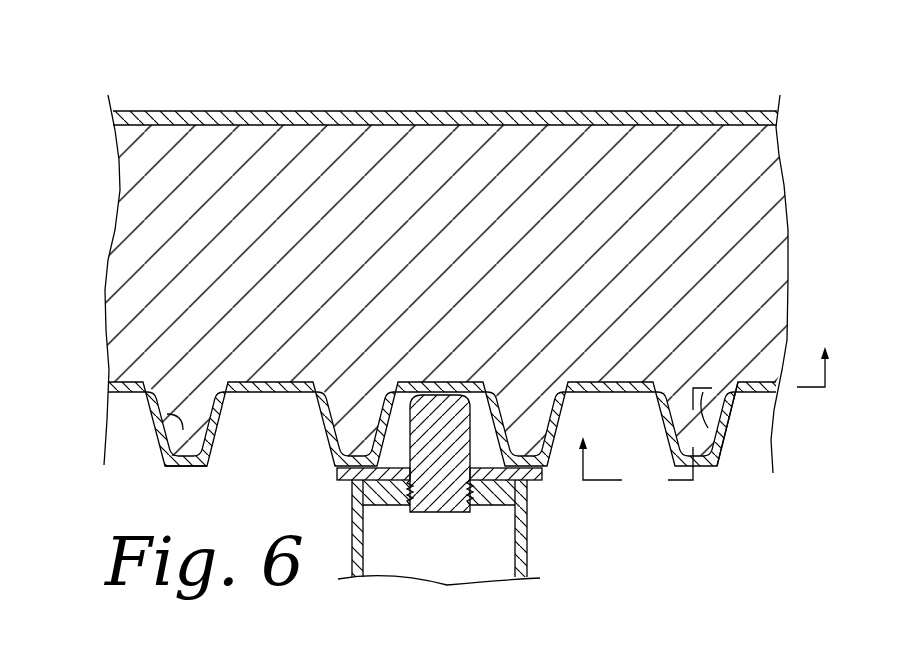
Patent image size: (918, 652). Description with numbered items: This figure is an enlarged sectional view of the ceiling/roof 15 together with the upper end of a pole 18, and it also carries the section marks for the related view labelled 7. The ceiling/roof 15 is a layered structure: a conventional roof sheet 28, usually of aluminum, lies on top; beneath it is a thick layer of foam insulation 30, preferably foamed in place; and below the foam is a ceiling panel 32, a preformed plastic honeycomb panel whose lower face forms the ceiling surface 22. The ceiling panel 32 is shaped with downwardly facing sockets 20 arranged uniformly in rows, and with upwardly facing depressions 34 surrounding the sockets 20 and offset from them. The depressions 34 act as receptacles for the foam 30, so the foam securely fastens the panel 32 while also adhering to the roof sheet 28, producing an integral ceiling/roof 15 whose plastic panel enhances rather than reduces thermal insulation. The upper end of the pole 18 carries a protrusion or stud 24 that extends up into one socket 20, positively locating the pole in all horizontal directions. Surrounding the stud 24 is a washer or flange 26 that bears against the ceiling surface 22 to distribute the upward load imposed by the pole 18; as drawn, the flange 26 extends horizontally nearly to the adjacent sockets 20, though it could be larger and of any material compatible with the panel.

The ceiling/roof 15 is at (491, 241).
The pole 18 is at (352, 551).
The socket 20 is at (216, 437).
The ceiling surface 22 is at (157, 491).
The stud 24 is at (507, 489).
The flange 26 is at (340, 481).
The roof sheet 28 is at (290, 111).
The foam insulation 30 is at (737, 228).
The ceiling panel 32 is at (729, 449).
The depression 34 is at (167, 414).
The section line 7- 7 is at (704, 436).